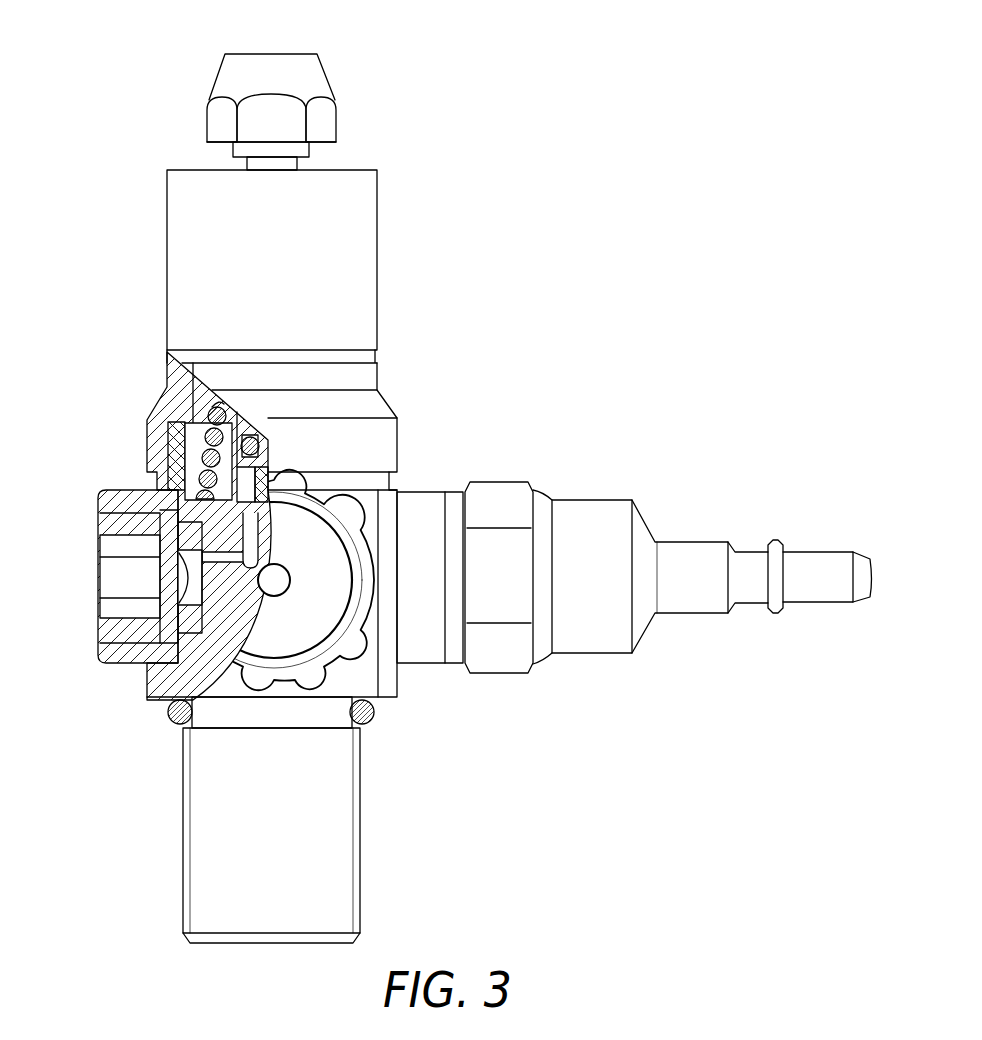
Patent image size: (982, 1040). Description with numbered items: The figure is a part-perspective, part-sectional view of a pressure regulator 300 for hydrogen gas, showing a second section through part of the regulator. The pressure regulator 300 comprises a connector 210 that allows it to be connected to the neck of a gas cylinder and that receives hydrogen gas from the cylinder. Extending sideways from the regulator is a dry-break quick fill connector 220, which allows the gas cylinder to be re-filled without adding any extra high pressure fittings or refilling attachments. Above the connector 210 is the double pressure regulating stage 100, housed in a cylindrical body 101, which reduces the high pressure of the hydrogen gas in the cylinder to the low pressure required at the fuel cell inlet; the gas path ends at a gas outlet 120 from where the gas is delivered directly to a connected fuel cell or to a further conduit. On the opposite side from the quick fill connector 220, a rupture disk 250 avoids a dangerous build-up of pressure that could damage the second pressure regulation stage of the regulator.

The double pressure regulating stage 100 is at (312, 354).
The cylindrical body 101 is at (367, 277).
The gas outlet 120 is at (272, 63).
The connector 210 is at (195, 843).
The dry-break quick fill connector 220 is at (595, 507).
The rupture disk 250 is at (105, 548).
The pressure regulator 300 is at (452, 476).